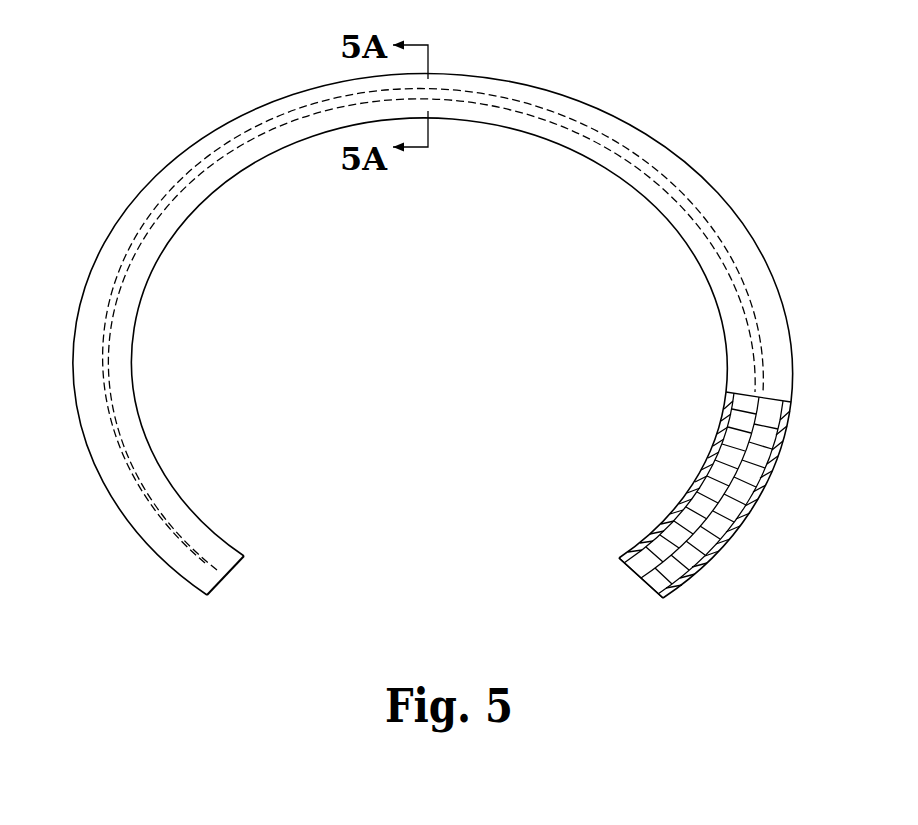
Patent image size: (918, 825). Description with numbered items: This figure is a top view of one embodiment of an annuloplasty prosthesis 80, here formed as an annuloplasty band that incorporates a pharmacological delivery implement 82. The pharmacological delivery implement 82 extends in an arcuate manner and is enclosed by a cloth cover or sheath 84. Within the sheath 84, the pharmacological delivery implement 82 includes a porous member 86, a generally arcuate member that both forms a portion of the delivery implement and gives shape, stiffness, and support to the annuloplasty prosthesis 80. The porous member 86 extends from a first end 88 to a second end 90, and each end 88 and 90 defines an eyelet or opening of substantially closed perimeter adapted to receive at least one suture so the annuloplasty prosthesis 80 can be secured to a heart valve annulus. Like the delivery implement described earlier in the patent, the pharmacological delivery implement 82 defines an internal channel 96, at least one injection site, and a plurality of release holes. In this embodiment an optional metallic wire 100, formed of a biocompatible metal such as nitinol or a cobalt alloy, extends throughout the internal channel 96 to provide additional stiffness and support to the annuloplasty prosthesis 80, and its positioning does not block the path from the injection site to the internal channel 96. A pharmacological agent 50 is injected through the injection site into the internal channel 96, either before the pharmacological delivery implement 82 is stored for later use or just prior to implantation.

The annuloplasty prosthesis 80 is at (624, 70).
The metallic wire 100 is at (216, 165).
The first end 88 is at (222, 562).
The pharmacological agent 50 is at (715, 494).
The pharmacological delivery implement 82 is at (713, 448).
The cloth sheath 84 is at (773, 470).
The porous member 86 is at (680, 503).
The second end 90 is at (647, 563).
The internal channel 96 is at (643, 582).